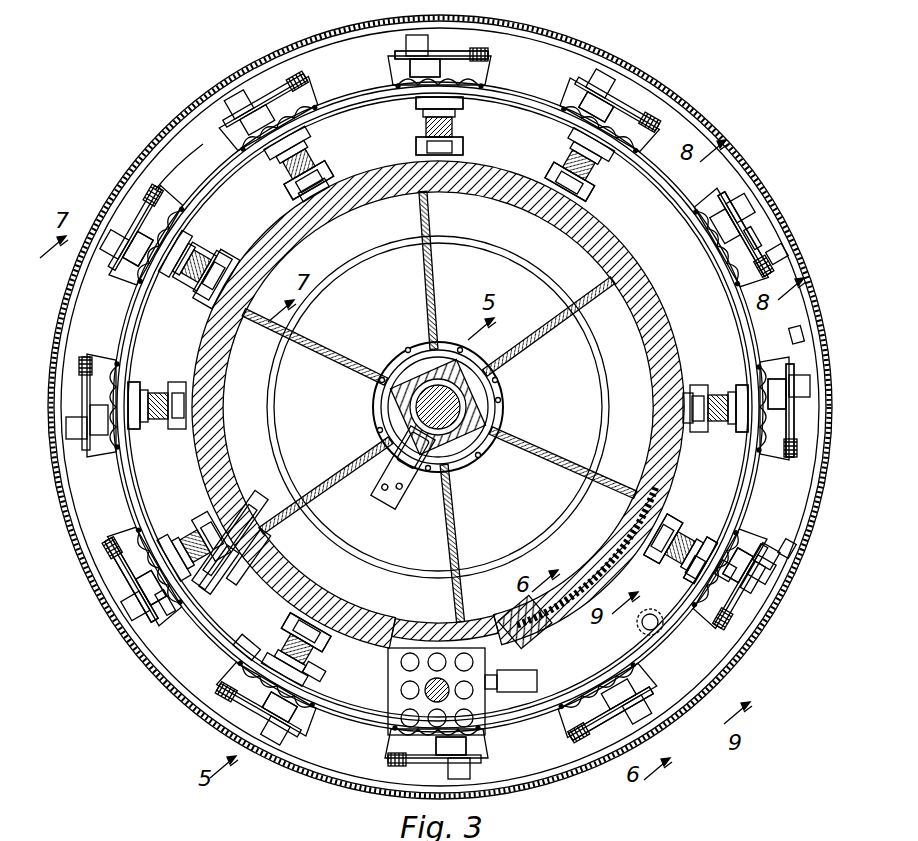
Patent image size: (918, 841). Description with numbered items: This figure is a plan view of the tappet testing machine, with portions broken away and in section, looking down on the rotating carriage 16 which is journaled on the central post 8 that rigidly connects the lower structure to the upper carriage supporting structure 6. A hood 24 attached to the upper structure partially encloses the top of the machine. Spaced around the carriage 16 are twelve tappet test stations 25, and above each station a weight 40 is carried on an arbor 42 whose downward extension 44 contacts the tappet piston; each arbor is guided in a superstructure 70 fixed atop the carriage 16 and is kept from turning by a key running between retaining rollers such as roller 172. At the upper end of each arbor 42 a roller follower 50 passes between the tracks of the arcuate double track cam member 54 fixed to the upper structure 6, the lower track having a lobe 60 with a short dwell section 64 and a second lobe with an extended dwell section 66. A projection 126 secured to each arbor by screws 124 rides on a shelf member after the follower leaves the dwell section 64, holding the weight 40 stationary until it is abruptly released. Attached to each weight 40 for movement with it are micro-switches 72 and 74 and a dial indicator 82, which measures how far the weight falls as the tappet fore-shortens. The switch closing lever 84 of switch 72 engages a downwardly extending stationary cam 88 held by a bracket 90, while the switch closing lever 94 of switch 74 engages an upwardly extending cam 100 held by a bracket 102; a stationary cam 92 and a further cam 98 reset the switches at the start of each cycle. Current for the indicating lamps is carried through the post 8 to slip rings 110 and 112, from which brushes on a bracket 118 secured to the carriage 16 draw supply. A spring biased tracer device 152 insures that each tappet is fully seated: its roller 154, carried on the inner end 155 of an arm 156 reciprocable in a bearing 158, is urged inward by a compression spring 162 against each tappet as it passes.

The upper carriage supporting structure 6 is at (602, 224).
The central post 8 is at (468, 404).
The carriage 16 is at (398, 620).
The hood 24 is at (756, 178).
The tappet test station 25 is at (166, 190).
The weight 40 is at (590, 165).
The arbor 42 is at (425, 126).
The downward extension of the arbor 44 is at (414, 726).
The roller follower 50 is at (465, 108).
The double track cam member 54 is at (240, 590).
The lobe 60 is at (252, 516).
The short dwell section 64 is at (470, 56).
The extended dwell section 66 is at (520, 620).
The superstructure 70 is at (440, 618).
The micro-switch 72 is at (400, 58).
The micro-switch 74 is at (395, 70).
The dial indicator 82 is at (300, 88).
The switch closing lever 84 is at (753, 223).
The stationary cam 88 is at (803, 260).
The bracket 90 is at (780, 326).
The stationary cam 92 is at (652, 735).
The switch closing lever 94 is at (446, 70).
The cam 98 is at (616, 665).
The upwardly extending cam 100 is at (196, 240).
The bracket 102 is at (188, 242).
The slip ring 110 is at (402, 380).
The slip ring 112 is at (500, 390).
The bracket 118 is at (405, 485).
The screws 124 is at (545, 692).
The projection 126 is at (300, 242).
The spring biased tracer device 152 is at (720, 665).
The roller 154 is at (652, 609).
The inner end of the arm 155 is at (702, 580).
The arm 156 is at (730, 690).
The bearing 158 is at (640, 690).
The compression spring 162 is at (700, 634).
The retaining roller 172 is at (576, 660).